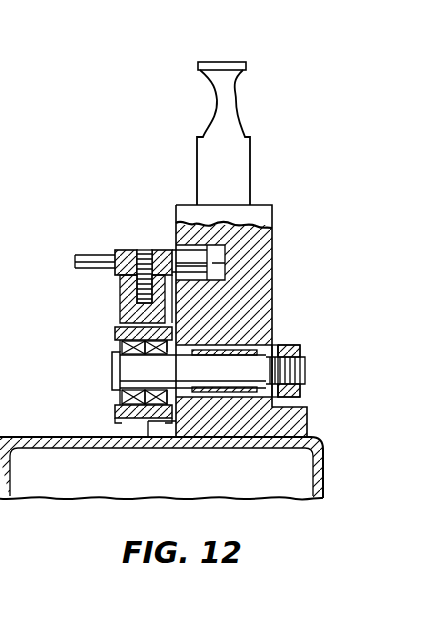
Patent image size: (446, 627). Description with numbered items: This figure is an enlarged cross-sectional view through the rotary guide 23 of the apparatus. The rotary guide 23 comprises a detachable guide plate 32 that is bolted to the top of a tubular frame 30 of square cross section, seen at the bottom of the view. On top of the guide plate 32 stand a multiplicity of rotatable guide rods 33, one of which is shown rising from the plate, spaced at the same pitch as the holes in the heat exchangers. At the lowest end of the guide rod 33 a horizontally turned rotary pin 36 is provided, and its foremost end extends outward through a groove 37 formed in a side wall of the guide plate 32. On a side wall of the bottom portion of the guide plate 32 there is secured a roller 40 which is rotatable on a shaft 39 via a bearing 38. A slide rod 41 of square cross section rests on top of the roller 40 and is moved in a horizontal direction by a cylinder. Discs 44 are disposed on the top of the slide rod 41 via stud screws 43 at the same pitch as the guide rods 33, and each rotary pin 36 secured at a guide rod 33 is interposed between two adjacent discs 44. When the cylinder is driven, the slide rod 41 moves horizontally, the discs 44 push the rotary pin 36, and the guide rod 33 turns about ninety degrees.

The rotary guide 23 is at (148, 222).
The tubular frame 30 is at (33, 437).
The guide plate 32 is at (274, 258).
The guide rod 33 is at (213, 62).
The rotary pin 36 is at (86, 256).
The groove 37 is at (188, 240).
The bearing 38 is at (122, 397).
The shaft 39 is at (114, 370).
The roller 40 is at (117, 327).
The slide rod 41 is at (118, 296).
The stud screw 43 is at (140, 250).
The disc 44 is at (120, 250).